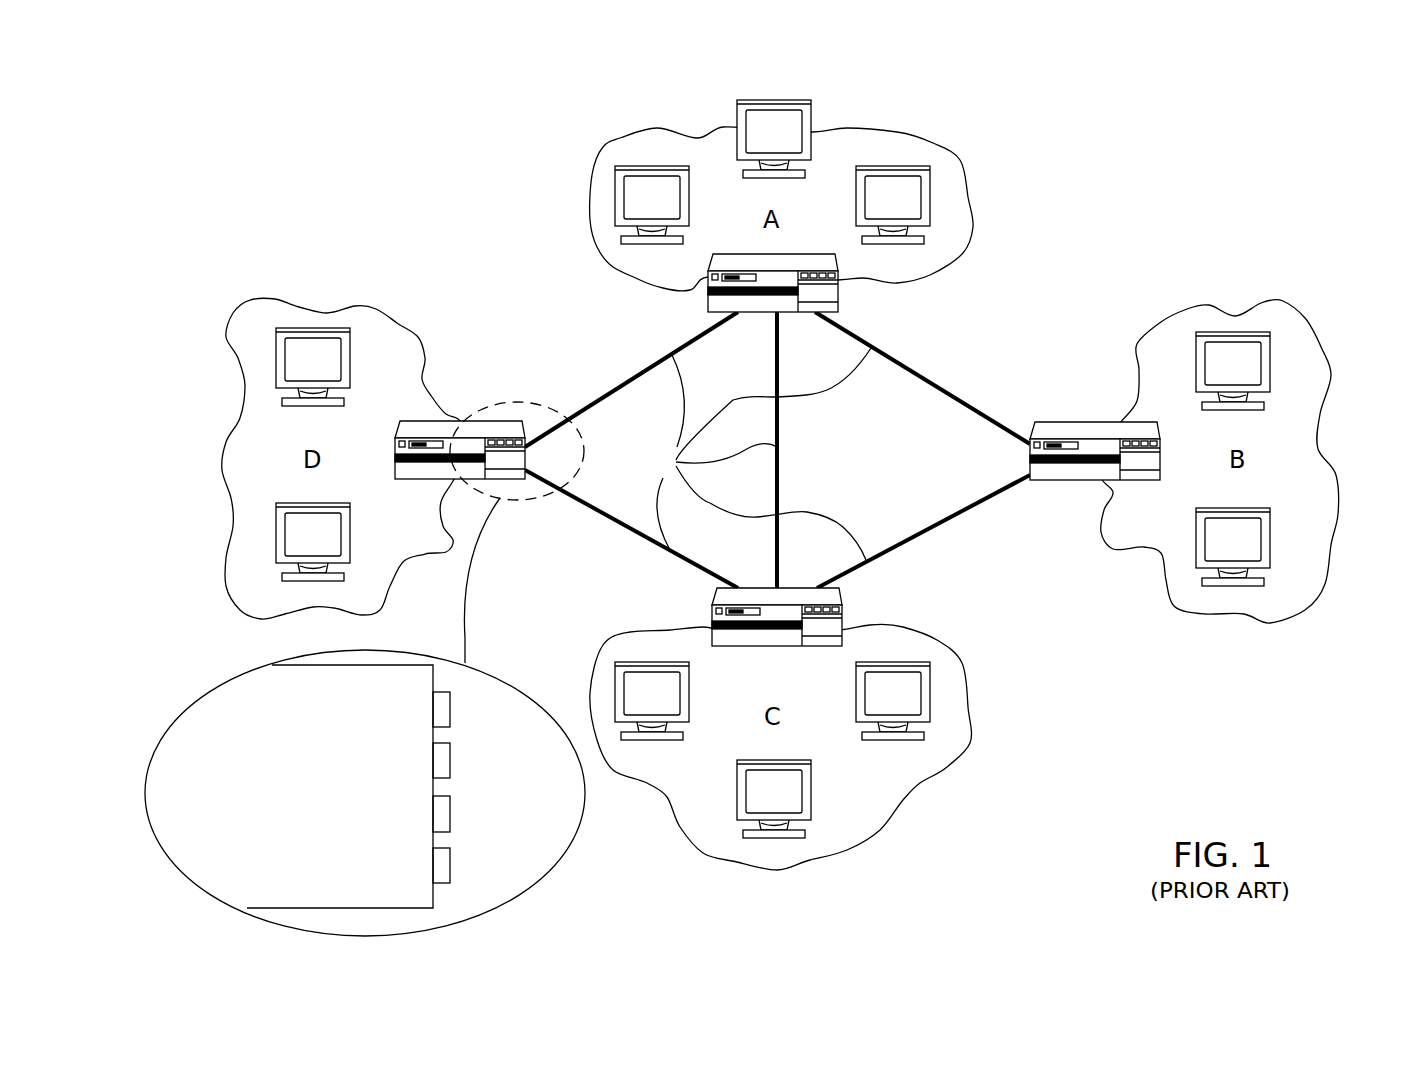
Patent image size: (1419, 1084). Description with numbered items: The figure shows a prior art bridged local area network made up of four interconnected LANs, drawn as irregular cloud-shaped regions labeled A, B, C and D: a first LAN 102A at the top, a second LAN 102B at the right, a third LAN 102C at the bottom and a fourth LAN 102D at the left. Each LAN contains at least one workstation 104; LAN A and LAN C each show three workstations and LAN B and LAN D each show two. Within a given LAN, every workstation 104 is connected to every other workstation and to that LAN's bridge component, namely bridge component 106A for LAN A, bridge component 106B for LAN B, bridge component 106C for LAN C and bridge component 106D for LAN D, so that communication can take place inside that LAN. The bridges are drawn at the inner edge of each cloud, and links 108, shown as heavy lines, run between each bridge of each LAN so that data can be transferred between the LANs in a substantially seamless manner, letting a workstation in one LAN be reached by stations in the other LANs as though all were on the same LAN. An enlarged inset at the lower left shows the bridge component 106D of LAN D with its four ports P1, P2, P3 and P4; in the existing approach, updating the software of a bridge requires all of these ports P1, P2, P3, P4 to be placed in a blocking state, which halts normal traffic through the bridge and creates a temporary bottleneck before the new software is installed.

The local area network A 102A is at (938, 142).
The local area network B 102B is at (1320, 322).
The local area network C 102C is at (865, 782).
The local area network D 102D is at (402, 328).
The workstation 104 is at (740, 127).
The bridge component 106A is at (838, 287).
The bridge component 106B is at (1074, 422).
The bridge component 106C is at (843, 610).
The bridge component 106D is at (460, 421).
The links 108 is at (678, 462).
The port P1 is at (450, 710).
The port P2 is at (450, 761).
The port P3 is at (450, 814).
The port P4 is at (450, 866).